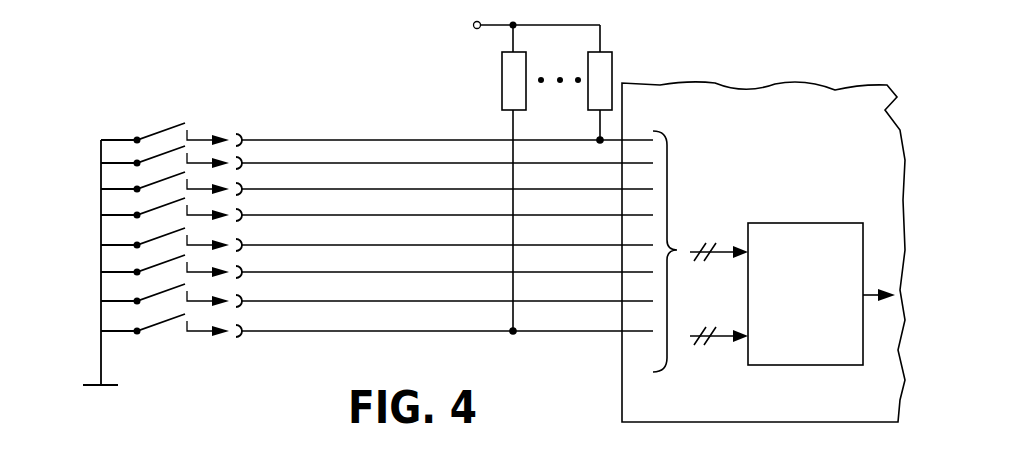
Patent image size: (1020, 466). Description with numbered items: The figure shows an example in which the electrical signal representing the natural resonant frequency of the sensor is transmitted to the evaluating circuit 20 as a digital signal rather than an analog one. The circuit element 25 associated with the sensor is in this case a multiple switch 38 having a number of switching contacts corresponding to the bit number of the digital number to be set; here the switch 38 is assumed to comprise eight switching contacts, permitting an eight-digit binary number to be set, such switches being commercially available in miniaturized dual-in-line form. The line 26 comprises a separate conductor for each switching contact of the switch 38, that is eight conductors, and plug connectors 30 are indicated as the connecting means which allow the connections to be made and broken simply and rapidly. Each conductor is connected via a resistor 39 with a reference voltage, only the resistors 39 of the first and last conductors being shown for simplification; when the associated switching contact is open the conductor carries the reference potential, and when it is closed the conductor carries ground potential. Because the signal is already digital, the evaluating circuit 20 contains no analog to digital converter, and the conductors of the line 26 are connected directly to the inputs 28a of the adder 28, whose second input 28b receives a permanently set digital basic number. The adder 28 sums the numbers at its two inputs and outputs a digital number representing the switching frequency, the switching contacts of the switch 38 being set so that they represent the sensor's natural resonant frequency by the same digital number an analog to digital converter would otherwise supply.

The multiple switch 38 is at (101, 150).
The circuit element 25 is at (157, 102).
The plug connectors 30 is at (237, 110).
The line 26 is at (330, 112).
The resistor 39 is at (510, 88).
The evaluating circuit 20 is at (702, 96).
The adder 28 is at (815, 240).
The input of the adder 28a is at (745, 246).
The second input of the adder 28b is at (745, 336).